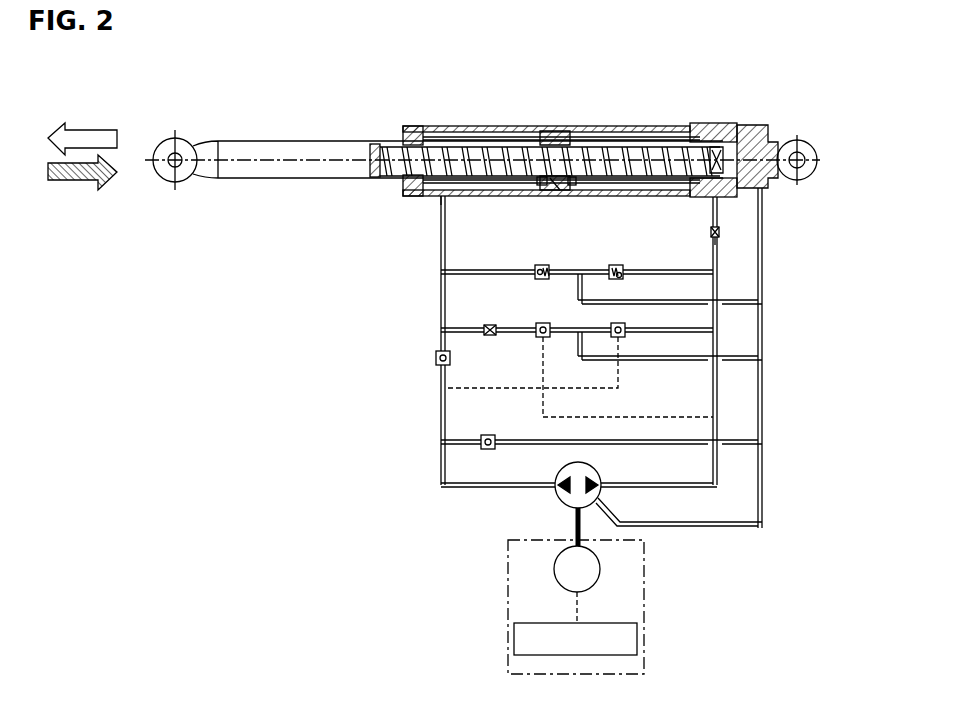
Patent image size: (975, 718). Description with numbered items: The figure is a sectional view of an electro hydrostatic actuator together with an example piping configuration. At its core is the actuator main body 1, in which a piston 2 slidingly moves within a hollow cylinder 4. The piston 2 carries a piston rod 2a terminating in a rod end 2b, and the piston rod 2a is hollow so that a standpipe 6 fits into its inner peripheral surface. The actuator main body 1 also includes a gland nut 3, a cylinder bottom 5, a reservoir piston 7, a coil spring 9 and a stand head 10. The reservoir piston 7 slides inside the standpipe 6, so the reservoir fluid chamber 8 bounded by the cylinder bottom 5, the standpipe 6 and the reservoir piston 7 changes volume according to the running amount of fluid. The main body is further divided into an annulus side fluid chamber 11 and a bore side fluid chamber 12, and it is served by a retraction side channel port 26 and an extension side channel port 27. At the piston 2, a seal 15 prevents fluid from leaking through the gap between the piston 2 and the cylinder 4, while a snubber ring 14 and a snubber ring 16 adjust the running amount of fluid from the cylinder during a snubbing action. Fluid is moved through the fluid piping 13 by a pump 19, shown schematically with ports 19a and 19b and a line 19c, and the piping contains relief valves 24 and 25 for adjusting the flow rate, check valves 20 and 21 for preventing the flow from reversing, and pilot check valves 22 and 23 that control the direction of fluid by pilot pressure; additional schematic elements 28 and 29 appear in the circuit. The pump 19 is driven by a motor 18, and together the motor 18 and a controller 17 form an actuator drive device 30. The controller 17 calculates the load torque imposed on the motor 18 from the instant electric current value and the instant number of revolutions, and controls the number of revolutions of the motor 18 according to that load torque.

The actuator main body 1 is at (613, 114).
The piston 2 is at (556, 128).
The piston rod 2a is at (292, 140).
The rod end 2b is at (166, 139).
The gland nut 3 is at (405, 130).
The cylinder 4 is at (650, 126).
The cylinder bottom 5 is at (722, 124).
The standpipe 6 is at (757, 127).
The reservoir piston 7 is at (721, 186).
The reservoir fluid chamber 8 is at (778, 180).
The coil spring 9 is at (617, 180).
The stand head 10 is at (376, 180).
The annulus side fluid chamber 11 is at (500, 185).
The bore side fluid chamber 12 is at (655, 188).
The fluid piping 13 is at (440, 303).
The snubber ring 14 is at (541, 188).
The seal 15 is at (560, 192).
The snubber ring 16 is at (578, 188).
The controller 17 is at (637, 655).
The motor 18 is at (601, 573).
The pump 19 is at (631, 497).
The pump first port 19a is at (560, 478).
The pump second port 19b is at (597, 478).
The pump drain line 19c is at (603, 501).
The check valve 20 is at (487, 435).
The check valve 21 is at (436, 360).
The pilot check valve 22 is at (536, 336).
The pilot check valve 23 is at (611, 327).
The relief valve 24 is at (535, 278).
The relief valve 25 is at (624, 272).
The retraction side channel port 26 is at (441, 197).
The extension side channel port 27 is at (712, 203).
The orifice 28 is at (486, 326).
The passage 29 is at (719, 238).
The actuator drive device 30 is at (507, 600).